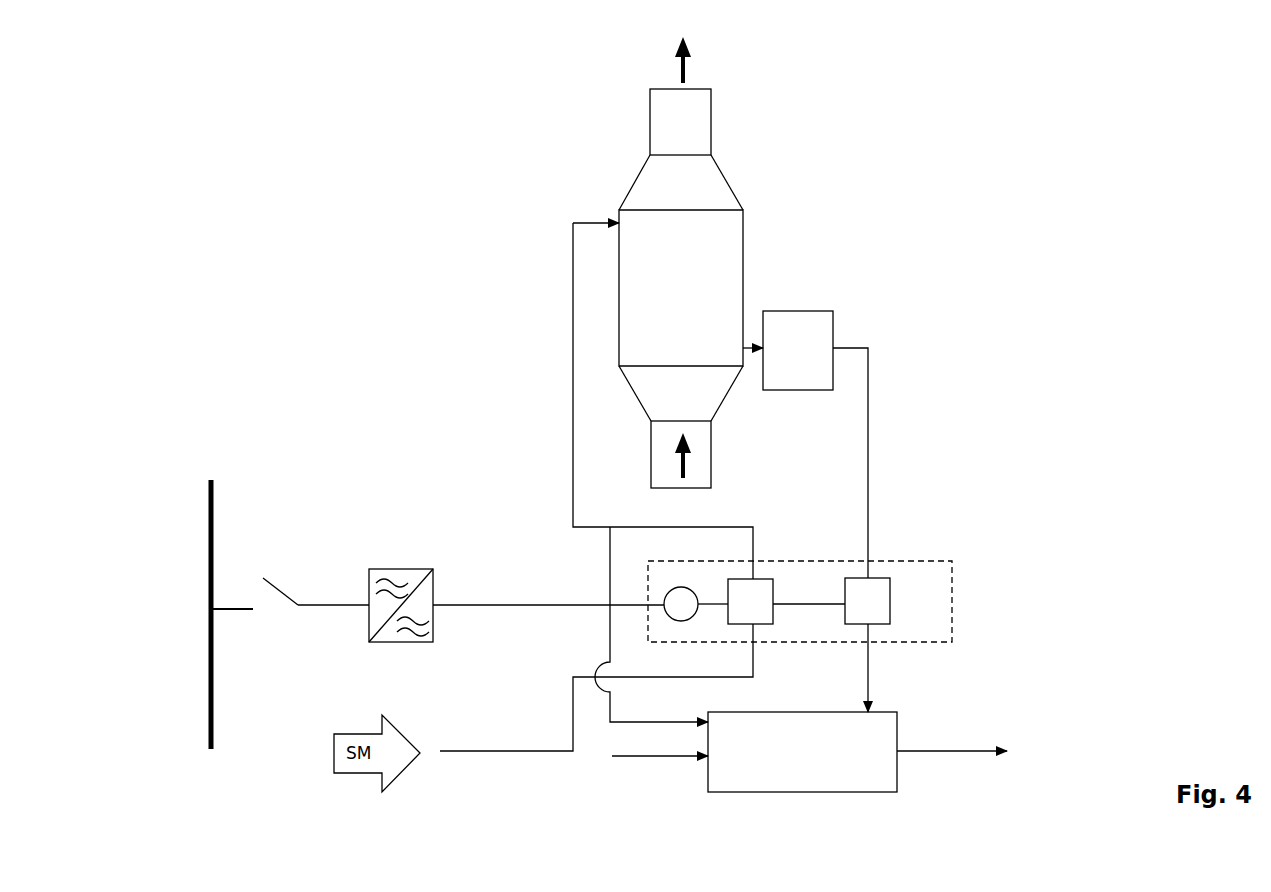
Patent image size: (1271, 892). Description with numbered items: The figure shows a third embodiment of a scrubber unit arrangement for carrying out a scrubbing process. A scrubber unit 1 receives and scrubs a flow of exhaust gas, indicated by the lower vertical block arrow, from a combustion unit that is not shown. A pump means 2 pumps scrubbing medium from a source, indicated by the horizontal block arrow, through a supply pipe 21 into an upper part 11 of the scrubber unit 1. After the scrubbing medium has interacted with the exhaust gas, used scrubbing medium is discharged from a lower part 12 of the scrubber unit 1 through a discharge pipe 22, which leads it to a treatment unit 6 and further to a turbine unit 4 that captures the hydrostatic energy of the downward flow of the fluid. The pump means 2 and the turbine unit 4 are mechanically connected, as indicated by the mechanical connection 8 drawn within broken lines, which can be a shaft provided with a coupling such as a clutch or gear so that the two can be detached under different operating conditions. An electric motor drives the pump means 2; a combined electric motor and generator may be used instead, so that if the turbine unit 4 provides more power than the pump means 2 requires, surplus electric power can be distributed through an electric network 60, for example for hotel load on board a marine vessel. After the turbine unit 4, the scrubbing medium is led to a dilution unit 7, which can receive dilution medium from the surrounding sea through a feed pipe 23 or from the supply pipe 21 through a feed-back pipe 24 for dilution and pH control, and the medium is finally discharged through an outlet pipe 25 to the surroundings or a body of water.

The scrubber unit 1 is at (753, 187).
The upper part 11 is at (665, 260).
The lower part 12 is at (717, 349).
The pump means 2 is at (753, 598).
The turbine unit 4 is at (873, 595).
The treatment unit 6 is at (818, 322).
The dilution unit 7 is at (885, 777).
The mechanical connection 8 is at (814, 605).
The supply pipe 21 is at (572, 402).
The discharge pipe 22 is at (868, 472).
The feed pipe 23 is at (642, 767).
The feed-back pipe 24 is at (601, 583).
The outlet pipe 25 is at (952, 739).
The electric network 60 is at (252, 555).